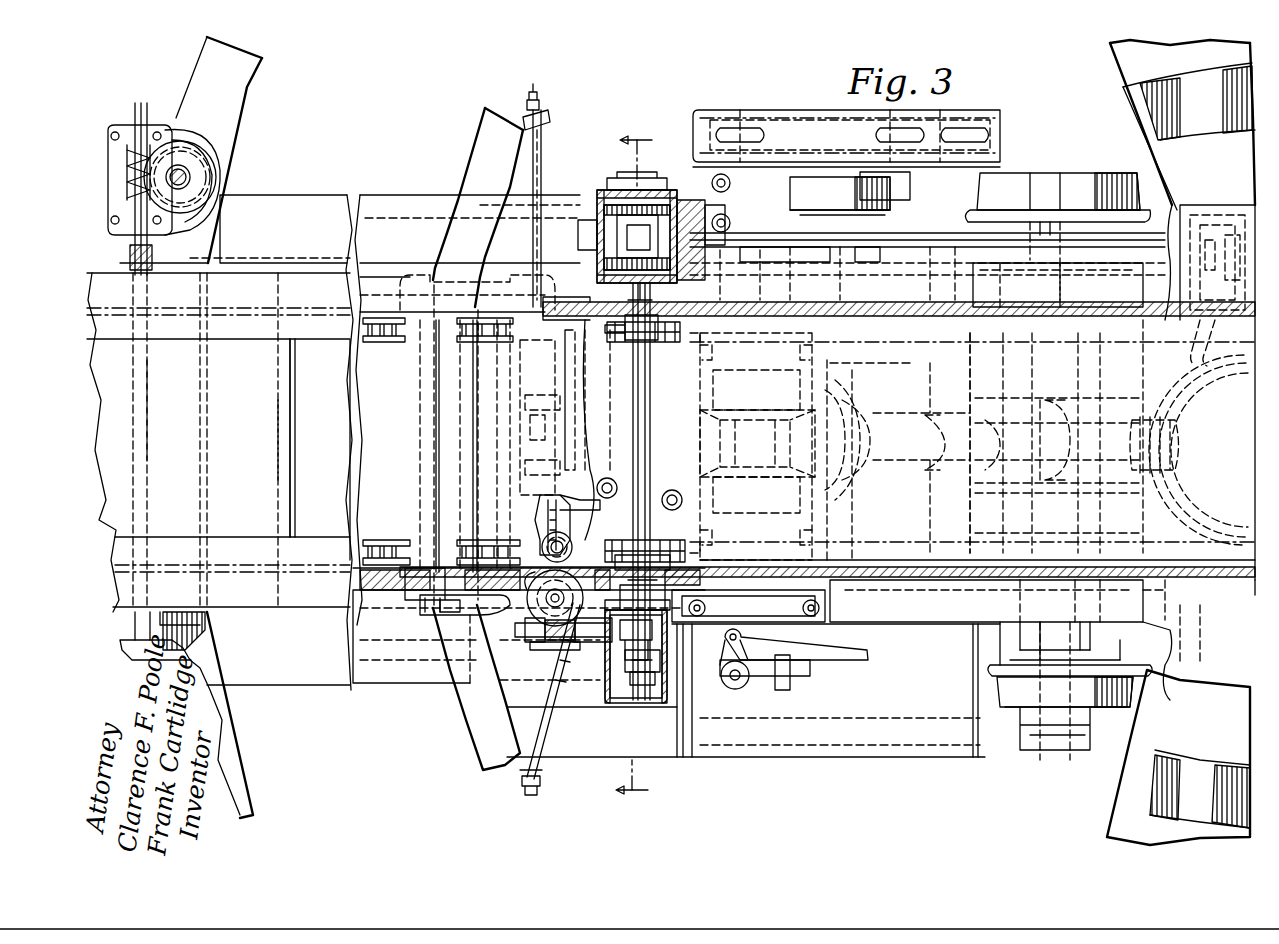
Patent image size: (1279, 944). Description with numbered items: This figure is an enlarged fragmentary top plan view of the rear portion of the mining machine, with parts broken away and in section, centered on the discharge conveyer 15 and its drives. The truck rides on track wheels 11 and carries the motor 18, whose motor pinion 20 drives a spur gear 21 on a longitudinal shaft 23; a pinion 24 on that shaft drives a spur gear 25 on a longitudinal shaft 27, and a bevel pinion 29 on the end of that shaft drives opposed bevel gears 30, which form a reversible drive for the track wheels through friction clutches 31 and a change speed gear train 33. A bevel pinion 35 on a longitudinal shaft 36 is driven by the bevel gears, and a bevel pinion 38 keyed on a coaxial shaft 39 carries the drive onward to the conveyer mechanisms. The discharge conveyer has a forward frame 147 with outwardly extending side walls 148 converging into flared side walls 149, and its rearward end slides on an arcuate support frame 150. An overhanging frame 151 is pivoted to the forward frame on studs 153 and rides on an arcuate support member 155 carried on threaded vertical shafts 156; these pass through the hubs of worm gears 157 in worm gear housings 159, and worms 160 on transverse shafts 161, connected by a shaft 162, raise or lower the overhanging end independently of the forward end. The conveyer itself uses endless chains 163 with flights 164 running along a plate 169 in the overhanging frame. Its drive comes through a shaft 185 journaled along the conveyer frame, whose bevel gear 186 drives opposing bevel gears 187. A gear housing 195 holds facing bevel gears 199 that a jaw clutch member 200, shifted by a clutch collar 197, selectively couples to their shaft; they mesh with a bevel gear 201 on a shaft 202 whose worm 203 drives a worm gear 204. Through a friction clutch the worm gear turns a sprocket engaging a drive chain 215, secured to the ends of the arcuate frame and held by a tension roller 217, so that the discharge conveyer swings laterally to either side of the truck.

The track wheels 11 is at (1080, 180).
The discharge conveyer 15 is at (322, 690).
The motor 18 is at (278, 468).
The motor pinion 20 is at (550, 468).
The spur gear 21 is at (540, 392).
The longitudinal shaft 23 is at (618, 380).
The pinion 24 is at (722, 365).
The spur gear 25 is at (700, 410).
The longitudinal shaft 27 is at (605, 450).
The bevel pinion 29 is at (720, 480).
The bevel gears 30 is at (765, 470).
The friction clutches 31 is at (812, 385).
The change speed gear train 33 is at (772, 287).
The bevel pinion 35 is at (815, 438).
The longitudinal shaft 36 is at (905, 455).
The bevel pinion 38 is at (1180, 435).
The shaft 39 is at (1115, 465).
The forward frame 147 is at (1128, 283).
The side walls 148 is at (1238, 195).
The flared side walls 149 is at (935, 625).
The arcuate support frame 150 is at (468, 160).
The overhanging frame 151 is at (320, 172).
The studs 153 is at (420, 605).
The arcuate support member 155 is at (248, 90).
The threaded vertical shafts 156 is at (195, 168).
The worm gears 157 is at (160, 145).
The worm gear housings 159 is at (185, 140).
The worms 160 is at (127, 166).
The transverse shafts 161 is at (128, 110).
The shaft 162 is at (160, 418).
The endless chains 163 is at (378, 340).
The flights 164 is at (296, 432).
The plate 169 is at (350, 497).
The shaft 185 is at (988, 250).
The bevel gear 186 is at (712, 184).
The bevel gears 187 is at (600, 200).
The gear housing 195 is at (660, 700).
The clutch collar 197 is at (662, 680).
The bevel gears 199 is at (712, 618).
The jaw clutch member 200 is at (690, 628).
The bevel gear 201 is at (610, 700).
The shaft 202 is at (533, 795).
The worm 203 is at (515, 640).
The worm gear 204 is at (535, 605).
The drive chain 215 is at (535, 518).
The tension roller 217 is at (570, 552).